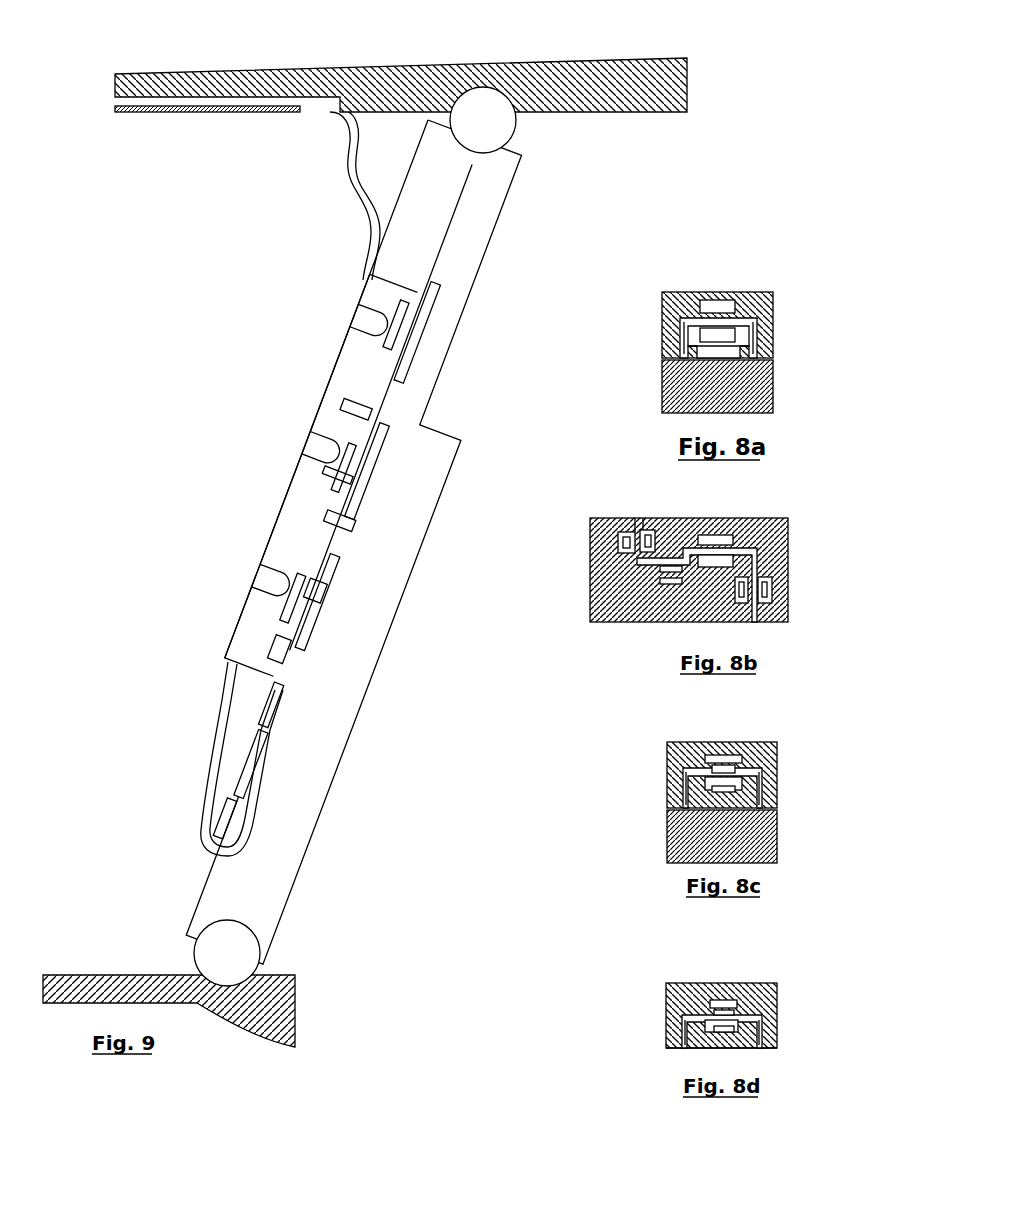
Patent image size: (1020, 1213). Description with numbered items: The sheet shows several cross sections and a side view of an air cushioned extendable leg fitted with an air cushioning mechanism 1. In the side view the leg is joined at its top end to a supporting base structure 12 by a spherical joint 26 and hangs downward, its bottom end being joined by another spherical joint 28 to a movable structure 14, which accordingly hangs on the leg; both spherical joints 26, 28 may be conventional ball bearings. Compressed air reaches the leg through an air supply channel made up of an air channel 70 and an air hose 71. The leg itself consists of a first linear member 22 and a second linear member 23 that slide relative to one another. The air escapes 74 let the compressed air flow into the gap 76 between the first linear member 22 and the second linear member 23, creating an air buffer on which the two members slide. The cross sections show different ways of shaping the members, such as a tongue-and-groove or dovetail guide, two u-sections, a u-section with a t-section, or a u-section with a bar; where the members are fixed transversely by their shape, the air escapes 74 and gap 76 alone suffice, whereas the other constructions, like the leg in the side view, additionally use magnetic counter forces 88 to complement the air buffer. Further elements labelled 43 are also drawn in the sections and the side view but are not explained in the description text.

In FIG. 9, the air cushioning mechanism 1 is at (352, 427).
In FIG. 9, the supporting base structure 12 is at (265, 78).
In FIG. 9, the movable structure 14 is at (95, 975).
In FIG. 9, the first linear member 22 is at (352, 372).
In FIG. 8A, the first linear member 22 is at (664, 312).
In FIG. 8B, the first linear member 22 is at (672, 535).
In FIG. 8C, the first linear member 22 is at (667, 755).
In FIG. 8D, the first linear member 22 is at (668, 1000).
In FIG. 9, the second linear member 23 is at (297, 852).
In FIG. 8A, the second linear member 23 is at (685, 385).
In FIG. 8B, the second linear member 23 is at (658, 610).
In FIG. 8C, the second linear member 23 is at (680, 830).
In FIG. 8D, the second linear member 23 is at (700, 1047).
In FIG. 9, the spherical joint 26 is at (520, 132).
In FIG. 9, the spherical joint 28 is at (183, 948).
In FIG. 9, the electrical contacts 43 is at (283, 672).
In FIG. 8A, the electrical contacts 43 is at (770, 320).
In FIG. 8B, the electrical contacts 43 is at (790, 540).
In FIG. 8C, the electrical contacts 43 is at (775, 780).
In FIG. 8D, the electrical contacts 43 is at (775, 1020).
In FIG. 9, the air channel 70 is at (210, 110).
In FIG. 9, the air hose 71 is at (350, 200).
In FIG. 9, the air escapes 74 is at (355, 482).
In FIG. 8A, the air escapes 74 is at (735, 330).
In FIG. 8B, the air escapes 74 is at (740, 550).
In FIG. 8C, the air escapes 74 is at (750, 758).
In FIG. 8D, the air escapes 74 is at (750, 1000).
In FIG. 9, the gap 76 is at (352, 407).
In FIG. 8A, the gap 76 is at (680, 355).
In FIG. 8B, the gap 76 is at (590, 568).
In FIG. 8C, the gap 76 is at (685, 805).
In FIG. 8D, the gap 76 is at (685, 1036).
In FIG. 9, the magnetic counter forces 88 is at (305, 598).
In FIG. 8B, the magnetic counter forces 88 is at (715, 535).
In FIG. 8C, the magnetic counter forces 88 is at (718, 758).
In FIG. 8D, the magnetic counter forces 88 is at (715, 1000).